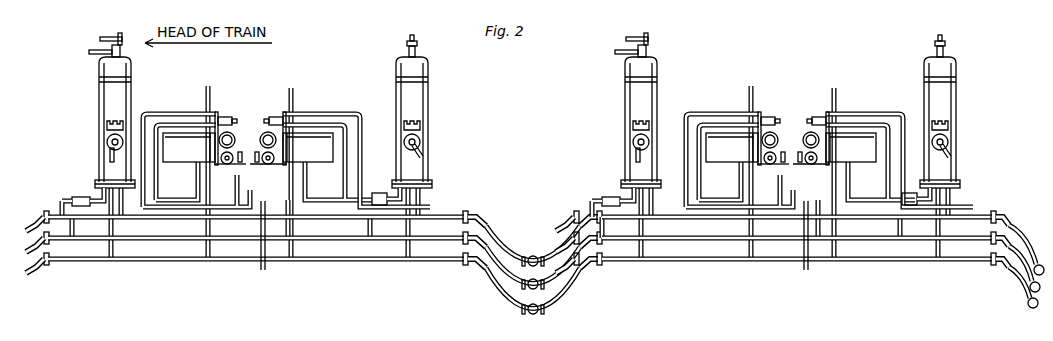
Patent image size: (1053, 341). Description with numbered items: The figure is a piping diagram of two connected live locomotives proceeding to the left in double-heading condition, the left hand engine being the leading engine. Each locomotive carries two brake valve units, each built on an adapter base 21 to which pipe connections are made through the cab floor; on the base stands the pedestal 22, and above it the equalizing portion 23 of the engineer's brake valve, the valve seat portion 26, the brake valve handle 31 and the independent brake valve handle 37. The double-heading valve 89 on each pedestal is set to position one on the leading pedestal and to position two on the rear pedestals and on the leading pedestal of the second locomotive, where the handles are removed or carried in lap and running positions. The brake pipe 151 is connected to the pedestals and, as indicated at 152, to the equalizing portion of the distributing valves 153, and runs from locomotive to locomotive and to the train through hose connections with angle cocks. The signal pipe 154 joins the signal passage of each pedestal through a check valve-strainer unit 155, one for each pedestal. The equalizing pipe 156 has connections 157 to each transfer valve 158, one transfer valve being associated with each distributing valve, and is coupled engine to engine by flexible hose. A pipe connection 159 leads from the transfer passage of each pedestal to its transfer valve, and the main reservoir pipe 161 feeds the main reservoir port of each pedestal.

The adapter base 21 is at (95, 186).
The pedestal 22 is at (99, 103).
The equalizing portion of the engineer's brake valve 23 is at (131, 80).
The valve seat portion 26 is at (396, 88).
The brake valve handle 31 is at (89, 52).
The independent brake valve handle 37 is at (113, 36).
The double-heading valve 89 is at (110, 153).
The brake pipe 151 is at (163, 262).
The brake pipe connection to distributing valve 152 is at (211, 177).
The distributing valve 153 is at (177, 152).
The signal pipe 154 is at (323, 242).
The check valve-strainer unit 155 is at (72, 203).
The equalizing pipe 156 is at (462, 215).
The equalizing pipe connection 157 is at (158, 200).
The transfer valve 158 is at (232, 116).
The pipe connection 159 is at (178, 113).
The main reservoir pipe 161 is at (236, 200).